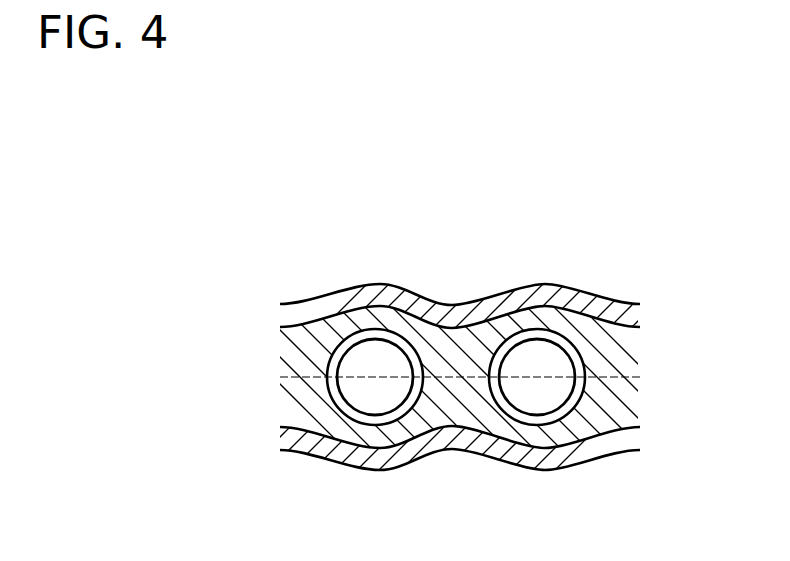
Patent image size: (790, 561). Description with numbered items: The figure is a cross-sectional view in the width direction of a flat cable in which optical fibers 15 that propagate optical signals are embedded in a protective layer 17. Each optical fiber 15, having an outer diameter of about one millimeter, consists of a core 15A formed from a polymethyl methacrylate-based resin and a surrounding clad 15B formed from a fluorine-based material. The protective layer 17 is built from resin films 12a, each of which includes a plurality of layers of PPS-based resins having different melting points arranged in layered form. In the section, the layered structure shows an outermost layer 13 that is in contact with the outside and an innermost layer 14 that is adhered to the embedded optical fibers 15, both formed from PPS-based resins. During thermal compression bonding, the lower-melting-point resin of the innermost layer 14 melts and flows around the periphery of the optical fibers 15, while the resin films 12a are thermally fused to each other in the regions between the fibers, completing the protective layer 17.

The resin film 12a is at (275, 303).
The outermost layer 13 is at (463, 315).
The innermost layer 14 is at (498, 427).
The optical fiber 15 is at (456, 377).
The core 15A is at (377, 403).
The clad 15B is at (396, 413).
The protective layer 17 is at (632, 437).